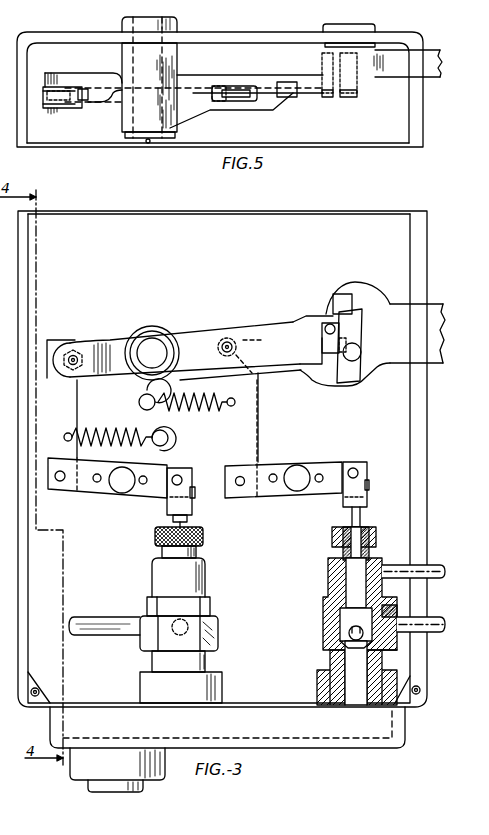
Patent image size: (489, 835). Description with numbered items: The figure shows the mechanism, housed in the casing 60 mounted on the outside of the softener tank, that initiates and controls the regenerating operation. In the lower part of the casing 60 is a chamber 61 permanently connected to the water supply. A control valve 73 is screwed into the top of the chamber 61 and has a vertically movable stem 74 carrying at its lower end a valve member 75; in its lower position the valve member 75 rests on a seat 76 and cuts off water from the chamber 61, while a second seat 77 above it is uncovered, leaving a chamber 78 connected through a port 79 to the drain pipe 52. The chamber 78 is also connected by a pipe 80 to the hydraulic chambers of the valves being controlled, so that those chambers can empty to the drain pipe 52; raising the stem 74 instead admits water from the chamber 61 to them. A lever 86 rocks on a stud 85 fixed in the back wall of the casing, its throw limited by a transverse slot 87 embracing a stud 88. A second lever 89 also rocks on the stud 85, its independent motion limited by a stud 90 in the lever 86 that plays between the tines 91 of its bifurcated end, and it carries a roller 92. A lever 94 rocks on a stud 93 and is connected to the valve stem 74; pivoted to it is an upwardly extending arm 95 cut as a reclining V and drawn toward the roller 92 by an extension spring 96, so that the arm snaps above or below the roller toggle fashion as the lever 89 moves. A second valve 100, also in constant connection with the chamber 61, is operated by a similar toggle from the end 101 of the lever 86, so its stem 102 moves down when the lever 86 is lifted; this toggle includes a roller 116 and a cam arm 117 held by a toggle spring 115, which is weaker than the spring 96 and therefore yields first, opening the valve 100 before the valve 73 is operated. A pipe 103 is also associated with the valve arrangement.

In FIG. 3, the drain pipe 52 is at (441, 565).
In FIG. 3, the casing 60 is at (395, 443).
In FIG. 3, the chamber 61 is at (392, 727).
In FIG. 3, the control valve 73 is at (326, 616).
In FIG. 3, the valve stem 74 is at (361, 520).
In FIG. 3, the valve member 75 is at (397, 648).
In FIG. 3, the seat 76 is at (340, 641).
In FIG. 3, the second seat 77 is at (348, 634).
In FIG. 3, the chamber 78 is at (388, 612).
In FIG. 3, the port 79 is at (376, 569).
In FIG. 3, the pipe 80 is at (441, 618).
In FIG. 5, the stud 85 is at (150, 141).
In FIG. 3, the stud 85 is at (153, 352).
In FIG. 5, the lever 86 is at (436, 79).
In FIG. 3, the lever 86 is at (432, 304).
In FIG. 3, the transverse slot 87 is at (358, 323).
In FIG. 5, the stud 88 is at (355, 97).
In FIG. 3, the stud 88 is at (356, 360).
In FIG. 5, the second lever 89 is at (291, 97).
In FIG. 3, the second lever 89 is at (262, 320).
In FIG. 5, the stud 90 is at (328, 97).
In FIG. 3, the stud 90 is at (332, 323).
In FIG. 3, the tines 91 is at (328, 320).
In FIG. 5, the roller 92 is at (228, 101).
In FIG. 3, the roller 92 is at (229, 338).
In FIG. 3, the stud 93 is at (300, 476).
In FIG. 3, the lever 94 is at (279, 470).
In FIG. 5, the arm 95 is at (253, 101).
In FIG. 3, the arm 95 is at (259, 420).
In FIG. 3, the extension spring 96 is at (204, 412).
In FIG. 3, the second valve 100 is at (205, 570).
In FIG. 5, the end of lever 101 is at (88, 75).
In FIG. 3, the end of lever 101 is at (111, 342).
In FIG. 3, the stem 102 is at (190, 524).
In FIG. 3, the pipe 103 is at (99, 624).
In FIG. 3, the toggle spring 115 is at (104, 432).
In FIG. 5, the roller 116 is at (78, 103).
In FIG. 3, the roller 116 is at (75, 350).
In FIG. 5, the arm 117 is at (50, 106).
In FIG. 3, the arm 117 is at (78, 414).